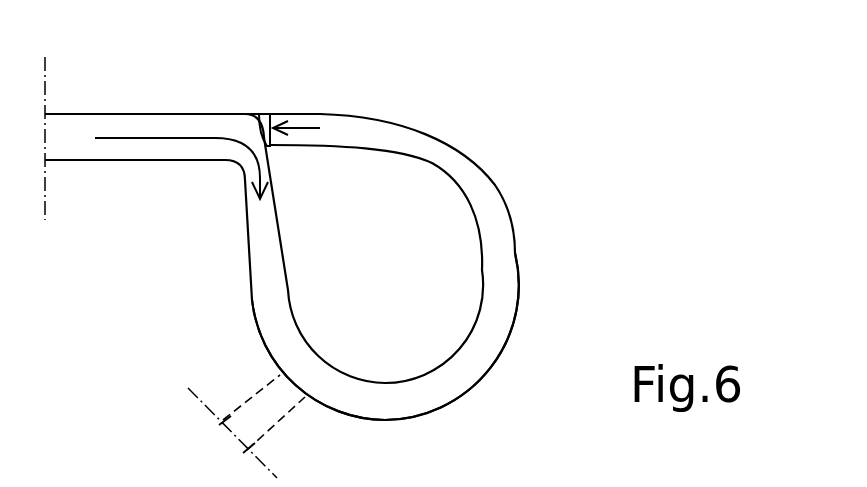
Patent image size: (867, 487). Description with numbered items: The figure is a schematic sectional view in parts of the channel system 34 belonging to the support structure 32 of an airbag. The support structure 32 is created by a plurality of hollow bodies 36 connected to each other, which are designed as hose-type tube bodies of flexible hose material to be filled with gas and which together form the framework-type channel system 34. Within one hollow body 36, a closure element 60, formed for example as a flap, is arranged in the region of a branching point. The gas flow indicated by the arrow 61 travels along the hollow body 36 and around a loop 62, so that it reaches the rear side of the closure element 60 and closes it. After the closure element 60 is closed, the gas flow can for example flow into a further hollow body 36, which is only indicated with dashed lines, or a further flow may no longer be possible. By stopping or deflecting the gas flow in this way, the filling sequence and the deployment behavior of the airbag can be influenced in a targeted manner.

The support structure 32 is at (590, 118).
The channel system 34 is at (493, 93).
The hollow body 36 is at (73, 143).
The closure element 60 is at (262, 112).
The arrow 61 is at (187, 142).
The loop 62 is at (500, 270).